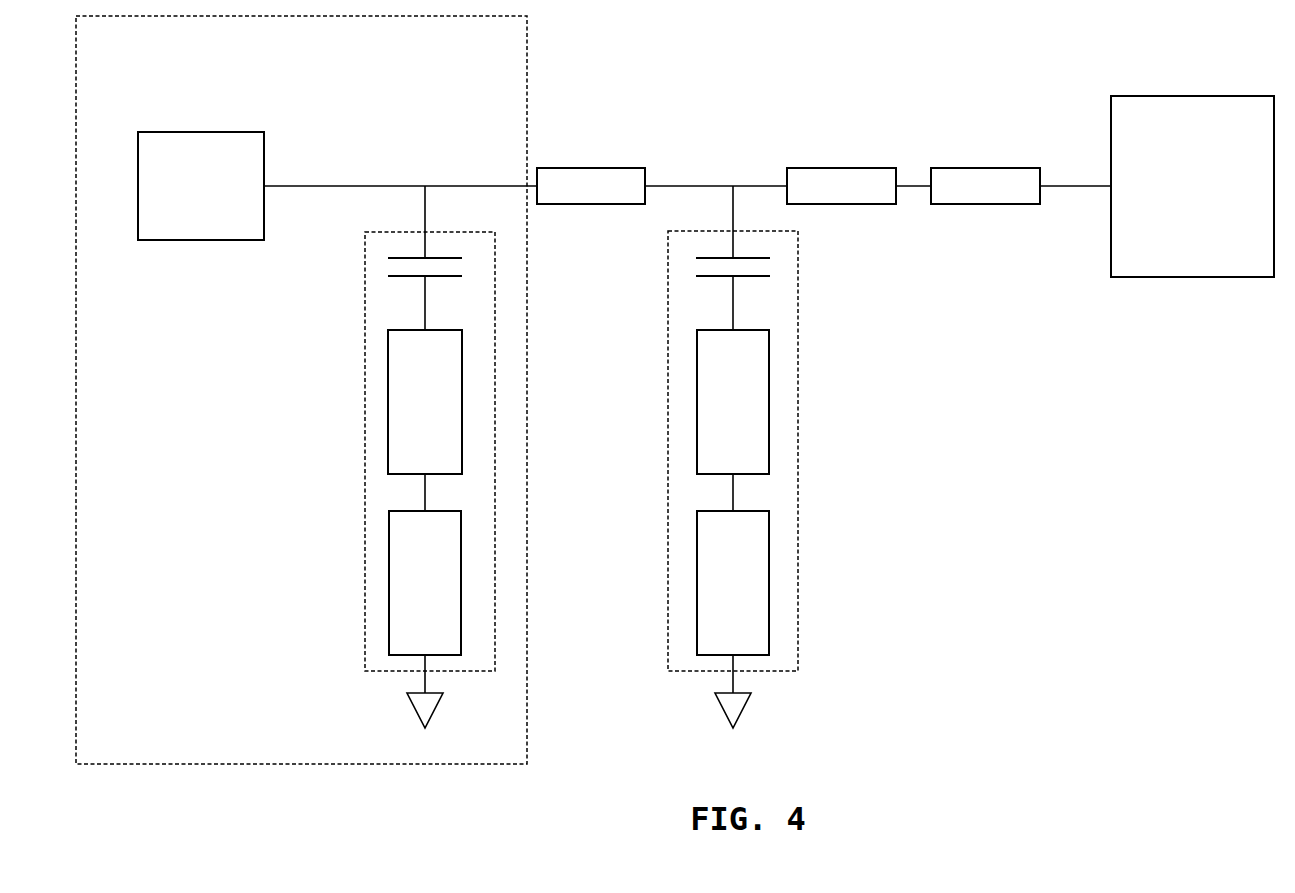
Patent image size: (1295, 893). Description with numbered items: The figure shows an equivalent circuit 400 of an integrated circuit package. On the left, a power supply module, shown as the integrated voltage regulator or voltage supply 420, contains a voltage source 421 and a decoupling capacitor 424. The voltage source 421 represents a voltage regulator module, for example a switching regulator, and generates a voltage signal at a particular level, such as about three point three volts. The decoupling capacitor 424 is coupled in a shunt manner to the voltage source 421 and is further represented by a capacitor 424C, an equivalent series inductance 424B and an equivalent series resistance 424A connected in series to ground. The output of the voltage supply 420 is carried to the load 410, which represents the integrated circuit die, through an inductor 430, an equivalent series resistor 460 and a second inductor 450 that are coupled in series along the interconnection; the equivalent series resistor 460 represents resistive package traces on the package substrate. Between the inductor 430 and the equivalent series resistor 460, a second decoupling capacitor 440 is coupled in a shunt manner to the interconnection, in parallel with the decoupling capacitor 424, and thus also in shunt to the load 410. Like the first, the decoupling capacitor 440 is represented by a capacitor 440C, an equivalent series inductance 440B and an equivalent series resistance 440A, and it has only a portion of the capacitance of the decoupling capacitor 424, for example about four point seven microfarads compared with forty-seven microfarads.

The circuit 400 is at (1131, 522).
The load 410 is at (1192, 186).
The voltage supply 420 is at (301, 390).
The voltage source 421 is at (201, 186).
The decoupling capacitor 424 is at (364, 663).
The equivalent series resistance 424A is at (404, 602).
The equivalent series inductance 424B is at (404, 420).
The capacitor 424C is at (388, 274).
The inductor 430 is at (576, 195).
The decoupling capacitor 440 is at (798, 658).
The equivalent series resistance 440A is at (712, 602).
The equivalent series inductance 440B is at (712, 420).
The capacitor 440C is at (770, 270).
The inductor 450 is at (972, 195).
The equivalent series resistor 460 is at (825, 190).